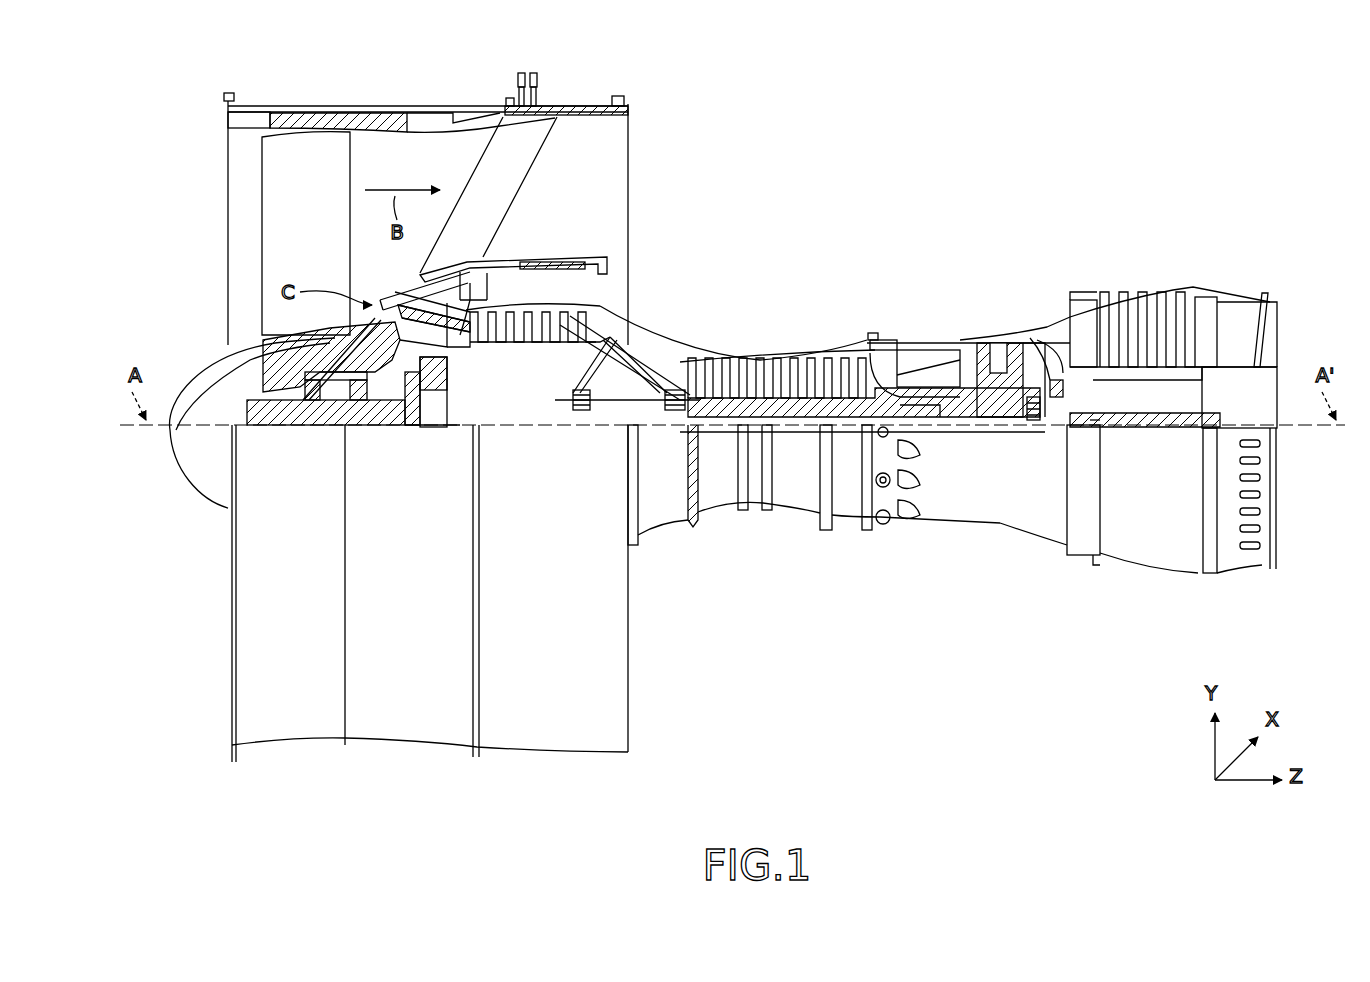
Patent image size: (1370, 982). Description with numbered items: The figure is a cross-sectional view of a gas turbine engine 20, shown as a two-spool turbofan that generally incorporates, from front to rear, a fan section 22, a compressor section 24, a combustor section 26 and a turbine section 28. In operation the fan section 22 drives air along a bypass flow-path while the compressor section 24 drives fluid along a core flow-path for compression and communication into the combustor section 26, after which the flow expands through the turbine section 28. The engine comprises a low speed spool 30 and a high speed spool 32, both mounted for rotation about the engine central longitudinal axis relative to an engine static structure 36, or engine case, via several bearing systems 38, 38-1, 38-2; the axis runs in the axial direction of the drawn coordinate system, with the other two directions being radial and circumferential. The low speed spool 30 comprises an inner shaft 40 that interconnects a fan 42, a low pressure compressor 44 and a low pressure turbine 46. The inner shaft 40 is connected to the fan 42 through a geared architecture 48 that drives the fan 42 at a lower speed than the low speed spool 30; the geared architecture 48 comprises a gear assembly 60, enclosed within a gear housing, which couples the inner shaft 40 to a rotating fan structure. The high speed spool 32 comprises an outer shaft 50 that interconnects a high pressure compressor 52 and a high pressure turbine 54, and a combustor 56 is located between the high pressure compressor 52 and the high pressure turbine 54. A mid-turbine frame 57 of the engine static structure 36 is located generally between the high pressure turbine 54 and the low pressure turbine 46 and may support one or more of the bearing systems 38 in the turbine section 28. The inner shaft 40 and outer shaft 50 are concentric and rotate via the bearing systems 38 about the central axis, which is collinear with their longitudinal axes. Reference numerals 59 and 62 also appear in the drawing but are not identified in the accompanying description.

The gas turbine engine 20 is at (978, 132).
The fan section 22 is at (477, 88).
The compressor section 24 is at (480, 220).
The combustor section 26 is at (870, 220).
The turbine section 28 is at (1207, 220).
The low speed spool 30 is at (805, 434).
The high speed spool 32 is at (843, 393).
The engine static structure 36 is at (405, 722).
The bearing system 38 is at (1040, 425).
The bearing system 38-1 is at (318, 402).
The bearing system 38-2 is at (578, 412).
The inner shaft 40 is at (655, 430).
The fan 42 is at (292, 235).
The low pressure compressor 44 is at (580, 322).
The low pressure turbine 46 is at (1128, 300).
The geared architecture 48 is at (445, 432).
The outer shaft 50 is at (918, 412).
The high pressure compressor 52 is at (782, 390).
The high pressure turbine 54 is at (1000, 345).
The combustor 56 is at (920, 365).
The mid-turbine frame 57 is at (1027, 330).
The turbine casing 59 is at (1050, 330).
The gear assembly 60 is at (450, 405).
The fan disk 62 is at (445, 380).